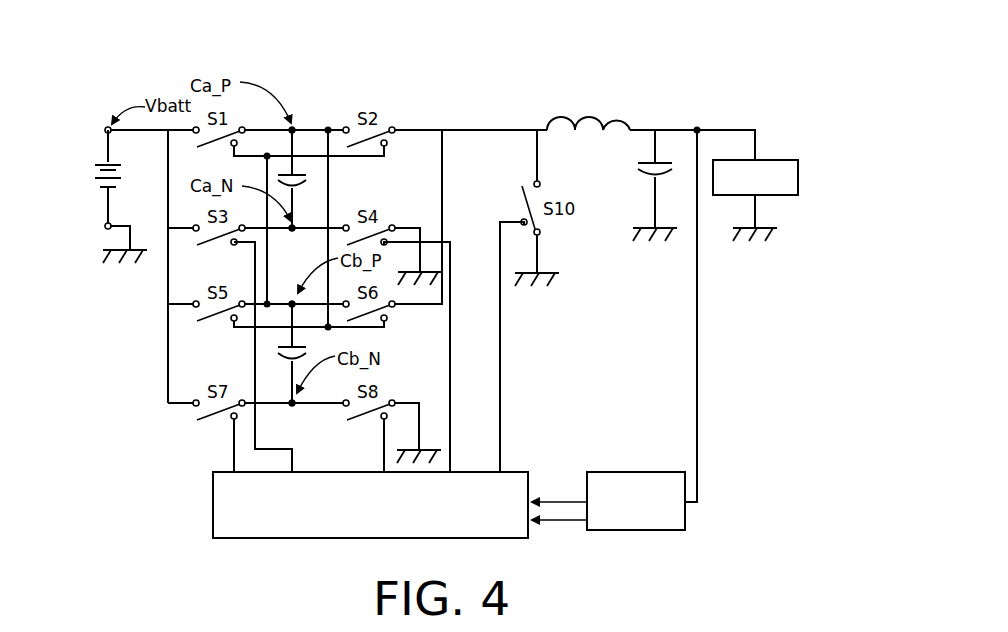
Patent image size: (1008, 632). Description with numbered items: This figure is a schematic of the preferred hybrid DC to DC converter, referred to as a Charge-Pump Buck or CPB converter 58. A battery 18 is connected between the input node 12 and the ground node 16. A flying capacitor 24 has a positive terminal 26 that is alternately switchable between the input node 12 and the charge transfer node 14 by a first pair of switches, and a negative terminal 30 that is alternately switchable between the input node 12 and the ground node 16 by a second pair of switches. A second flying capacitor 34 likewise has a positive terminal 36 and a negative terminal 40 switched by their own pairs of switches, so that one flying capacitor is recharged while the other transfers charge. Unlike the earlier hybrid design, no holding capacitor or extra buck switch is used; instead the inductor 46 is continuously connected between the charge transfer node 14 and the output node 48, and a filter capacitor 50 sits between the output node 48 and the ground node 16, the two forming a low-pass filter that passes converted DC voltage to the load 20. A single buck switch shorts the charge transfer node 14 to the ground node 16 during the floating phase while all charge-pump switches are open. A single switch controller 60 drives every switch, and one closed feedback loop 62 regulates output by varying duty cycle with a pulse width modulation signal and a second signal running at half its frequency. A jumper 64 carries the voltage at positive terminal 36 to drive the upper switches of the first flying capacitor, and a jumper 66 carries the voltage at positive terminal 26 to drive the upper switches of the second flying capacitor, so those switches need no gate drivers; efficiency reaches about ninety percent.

The input node 12 is at (168, 348).
The charge transfer node 14 is at (482, 128).
The ground node 16 is at (130, 238).
The battery 18 is at (115, 165).
The load 20 is at (758, 160).
The flying capacitor 24 is at (299, 189).
The positive terminal 26 is at (294, 128).
The negative terminal 30 is at (293, 231).
The second flying capacitor 34 is at (285, 358).
The positive terminal 36 is at (291, 302).
The negative terminal 40 is at (293, 406).
The inductor 46 is at (598, 118).
The output node 48 is at (728, 130).
The filter capacitor 50 is at (650, 162).
The CPB converter 58 is at (437, 84).
The switch controller 60 is at (213, 502).
The closed feedback loop 62 is at (630, 472).
The jumper 64 is at (265, 178).
The jumper 66 is at (330, 188).